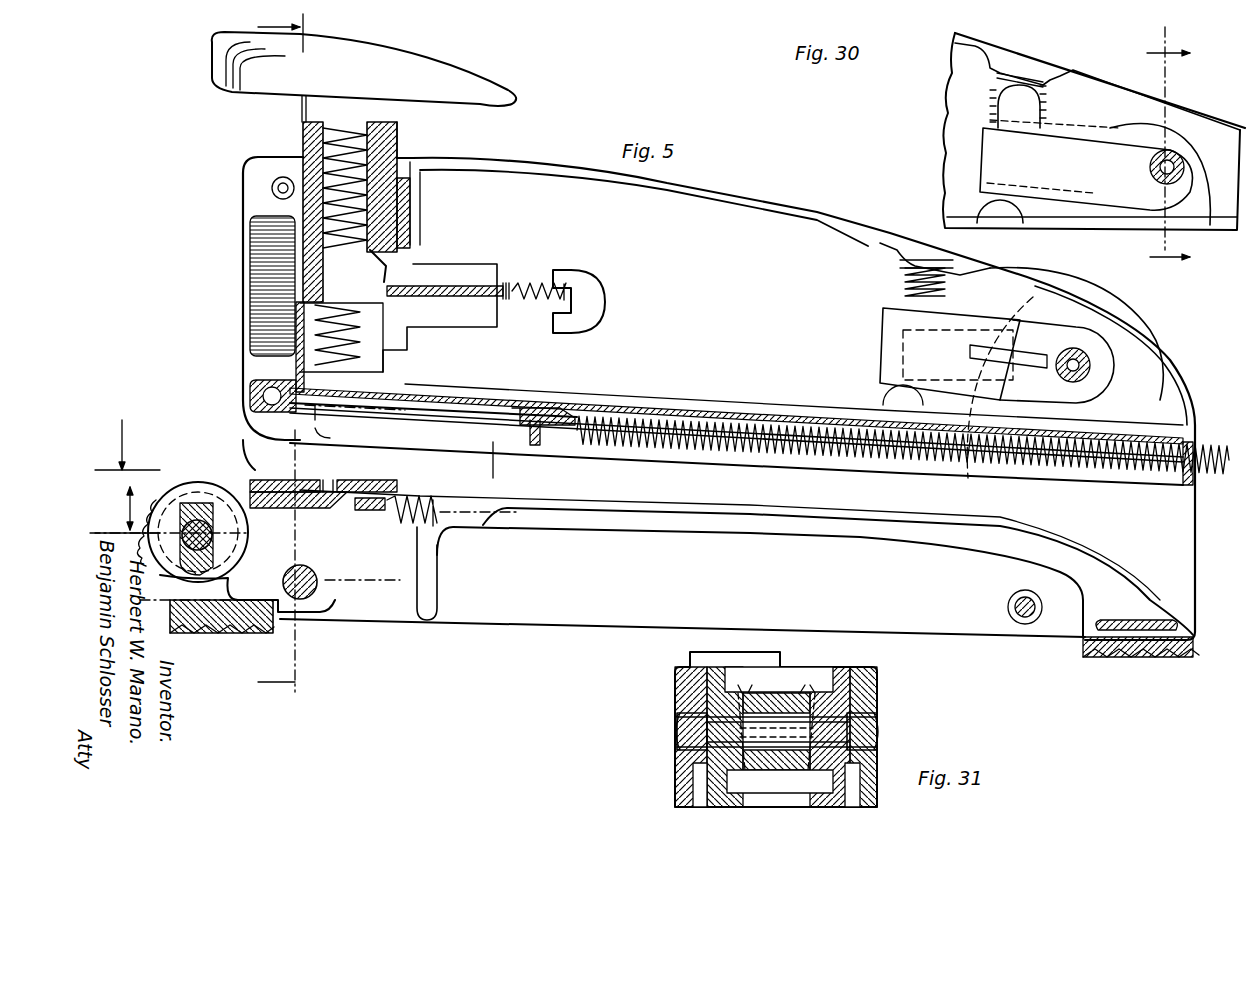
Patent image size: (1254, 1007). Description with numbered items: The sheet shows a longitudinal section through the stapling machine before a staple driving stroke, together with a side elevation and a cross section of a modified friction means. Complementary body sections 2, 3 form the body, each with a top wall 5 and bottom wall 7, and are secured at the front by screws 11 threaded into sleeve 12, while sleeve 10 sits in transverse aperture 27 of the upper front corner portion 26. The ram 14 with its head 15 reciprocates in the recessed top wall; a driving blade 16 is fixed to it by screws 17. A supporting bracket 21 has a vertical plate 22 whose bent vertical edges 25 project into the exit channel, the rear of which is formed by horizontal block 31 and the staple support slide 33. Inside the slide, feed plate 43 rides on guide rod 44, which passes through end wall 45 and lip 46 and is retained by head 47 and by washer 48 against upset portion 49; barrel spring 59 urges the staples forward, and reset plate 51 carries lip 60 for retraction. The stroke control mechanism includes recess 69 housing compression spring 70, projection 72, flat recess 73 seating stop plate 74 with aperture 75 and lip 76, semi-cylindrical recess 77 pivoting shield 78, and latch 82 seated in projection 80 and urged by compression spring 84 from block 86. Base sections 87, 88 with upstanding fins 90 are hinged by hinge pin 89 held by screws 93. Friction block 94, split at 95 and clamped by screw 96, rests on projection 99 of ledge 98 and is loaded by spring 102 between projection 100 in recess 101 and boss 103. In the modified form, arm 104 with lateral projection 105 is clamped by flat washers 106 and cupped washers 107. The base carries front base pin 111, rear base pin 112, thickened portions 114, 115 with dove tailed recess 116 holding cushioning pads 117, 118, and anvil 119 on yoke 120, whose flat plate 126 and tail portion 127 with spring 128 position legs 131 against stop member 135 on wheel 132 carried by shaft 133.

In FIG. 5, the body section 2 is at (722, 259).
In FIG. 30, the body section 2 is at (945, 165).
In FIG. 31, the body section 2 is at (712, 665).
In FIG. 31, the body section 3 is at (832, 665).
In FIG. 5, the top wall 5 is at (330, 168).
In FIG. 5, the bottom wall 7 is at (280, 350).
In FIG. 5, the sleeve 10 is at (272, 188).
In FIG. 5, the screws 11 is at (1205, 540).
In FIG. 5, the sleeve 12 is at (262, 396).
In FIG. 5, the ram 14 is at (440, 125).
In FIG. 5, the head 15 is at (478, 76).
In FIG. 5, the driving blade 16 is at (300, 320).
In FIG. 5, the screws 17 is at (250, 277).
In FIG. 5, the supporting bracket 21 is at (262, 374).
In FIG. 5, the vertical plate 22 is at (280, 438).
In FIG. 5, the vertical edges 25 is at (503, 497).
In FIG. 5, the upper front corner portion 26 is at (294, 476).
In FIG. 5, the transverse aperture 27 is at (347, 580).
In FIG. 30, the horizontal block 31 is at (1180, 51).
In FIG. 5, the staple support slide 33 is at (640, 410).
In FIG. 5, the feed plate 43 is at (558, 441).
In FIG. 5, the guide rod 44 is at (788, 462).
In FIG. 5, the end wall 45 is at (1178, 480).
In FIG. 5, the lip 46 is at (320, 434).
In FIG. 5, the head 47 is at (1178, 465).
In FIG. 5, the washer 48 is at (315, 428).
In FIG. 5, the upset portion 49 is at (262, 425).
In FIG. 5, the reset plate 51 is at (534, 446).
In FIG. 5, the barrel spring 59 is at (714, 462).
In FIG. 5, the lip 60 is at (522, 432).
In FIG. 5, the recess 69 is at (303, 136).
In FIG. 5, the coiled compression spring 70 is at (398, 140).
In FIG. 5, the projection 72 is at (422, 170).
In FIG. 5, the flat recess 73 is at (412, 218).
In FIG. 5, the stop plate 74 is at (452, 197).
In FIG. 5, the aperture 75 is at (406, 256).
In FIG. 5, the lip 76 is at (405, 289).
In FIG. 5, the semi-cylindrical recess 77 is at (402, 248).
In FIG. 5, the shield 78 is at (392, 268).
In FIG. 5, the projection 80 is at (485, 275).
In FIG. 5, the latch 82 is at (455, 300).
In FIG. 5, the compression spring 84 is at (524, 305).
In FIG. 5, the block 86 is at (595, 280).
In FIG. 5, the base section 87 is at (716, 579).
In FIG. 31, the base section 87 is at (675, 681).
In FIG. 31, the base section 88 is at (877, 799).
In FIG. 5, the hinge pin 89 is at (1090, 362).
In FIG. 30, the hinge pin 89 is at (1148, 166).
In FIG. 31, the hinge pin 89 is at (877, 718).
In FIG. 5, the upstanding fin 90 is at (1052, 283).
In FIG. 31, the screws 93 is at (677, 729).
In FIG. 5, the friction block 94 is at (882, 356).
In FIG. 5, the split 95 is at (985, 345).
In FIG. 5, the screw 96 is at (1022, 395).
In FIG. 5, the ledge 98 is at (733, 412).
In FIG. 5, the projection 99 is at (884, 395).
In FIG. 30, the projection 99 is at (1005, 215).
In FIG. 5, the projection 100 is at (905, 287).
In FIG. 5, the recess 101 is at (903, 327).
In FIG. 5, the coiled compression spring 102 is at (900, 264).
In FIG. 30, the coiled compression spring 102 is at (1048, 96).
In FIG. 5, the boss 103 is at (882, 248).
In FIG. 30, the boss 103 is at (1033, 73).
In FIG. 30, the arm 104 is at (1062, 170).
In FIG. 31, the arm 104 is at (812, 688).
In FIG. 30, the lateral projection 105 is at (1012, 100).
In FIG. 31, the flat washers 106 is at (795, 770).
In FIG. 31, the cupped washers 107 is at (888, 681).
In FIG. 5, the front base pin 111 is at (310, 605).
In FIG. 5, the rear base pin 112 is at (1028, 624).
In FIG. 5, the thickened portion 114 is at (264, 600).
In FIG. 5, the thickened portion 115 is at (1090, 642).
In FIG. 5, the dove tailed recess 116 is at (263, 633).
In FIG. 5, the cushioning pad 117 is at (213, 633).
In FIG. 5, the pad 118 is at (1118, 652).
In FIG. 5, the anvil 119 is at (398, 446).
In FIG. 5, the yoke 120 is at (312, 525).
In FIG. 5, the flat plate 126 is at (318, 480).
In FIG. 5, the tail portion 127 is at (355, 512).
In FIG. 5, the coiled compression spring 128 is at (388, 528).
In FIG. 5, the legs 131 is at (214, 515).
In FIG. 5, the wheel 132 is at (172, 486).
In FIG. 5, the shaft 133 is at (212, 536).
In FIG. 5, the stop member 135 is at (195, 500).